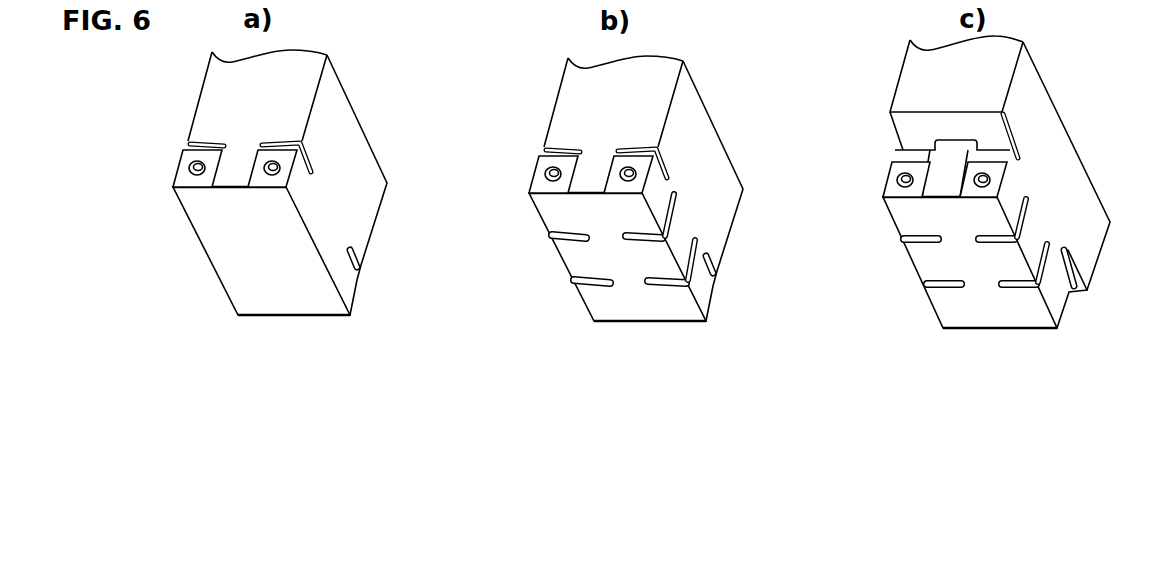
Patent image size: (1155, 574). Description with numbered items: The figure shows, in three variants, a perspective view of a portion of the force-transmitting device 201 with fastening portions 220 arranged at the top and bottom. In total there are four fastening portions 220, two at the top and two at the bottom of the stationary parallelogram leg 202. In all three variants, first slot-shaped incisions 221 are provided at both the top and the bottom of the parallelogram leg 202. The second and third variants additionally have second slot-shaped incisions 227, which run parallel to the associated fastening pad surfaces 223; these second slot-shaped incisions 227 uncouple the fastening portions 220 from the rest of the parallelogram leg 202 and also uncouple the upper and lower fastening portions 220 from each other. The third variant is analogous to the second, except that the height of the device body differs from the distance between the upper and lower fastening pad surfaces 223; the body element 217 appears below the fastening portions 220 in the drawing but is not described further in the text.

The force-transmitting device 201 is at (333, 47).
The stationary parallelogram leg 202 is at (338, 208).
The base plate 217 is at (227, 250).
The fastening portion 220 is at (307, 183).
The first slot-shaped incision 221 is at (305, 143).
The fastening pad surface 223 is at (173, 187).
The second slot-shaped incision 227 is at (677, 192).